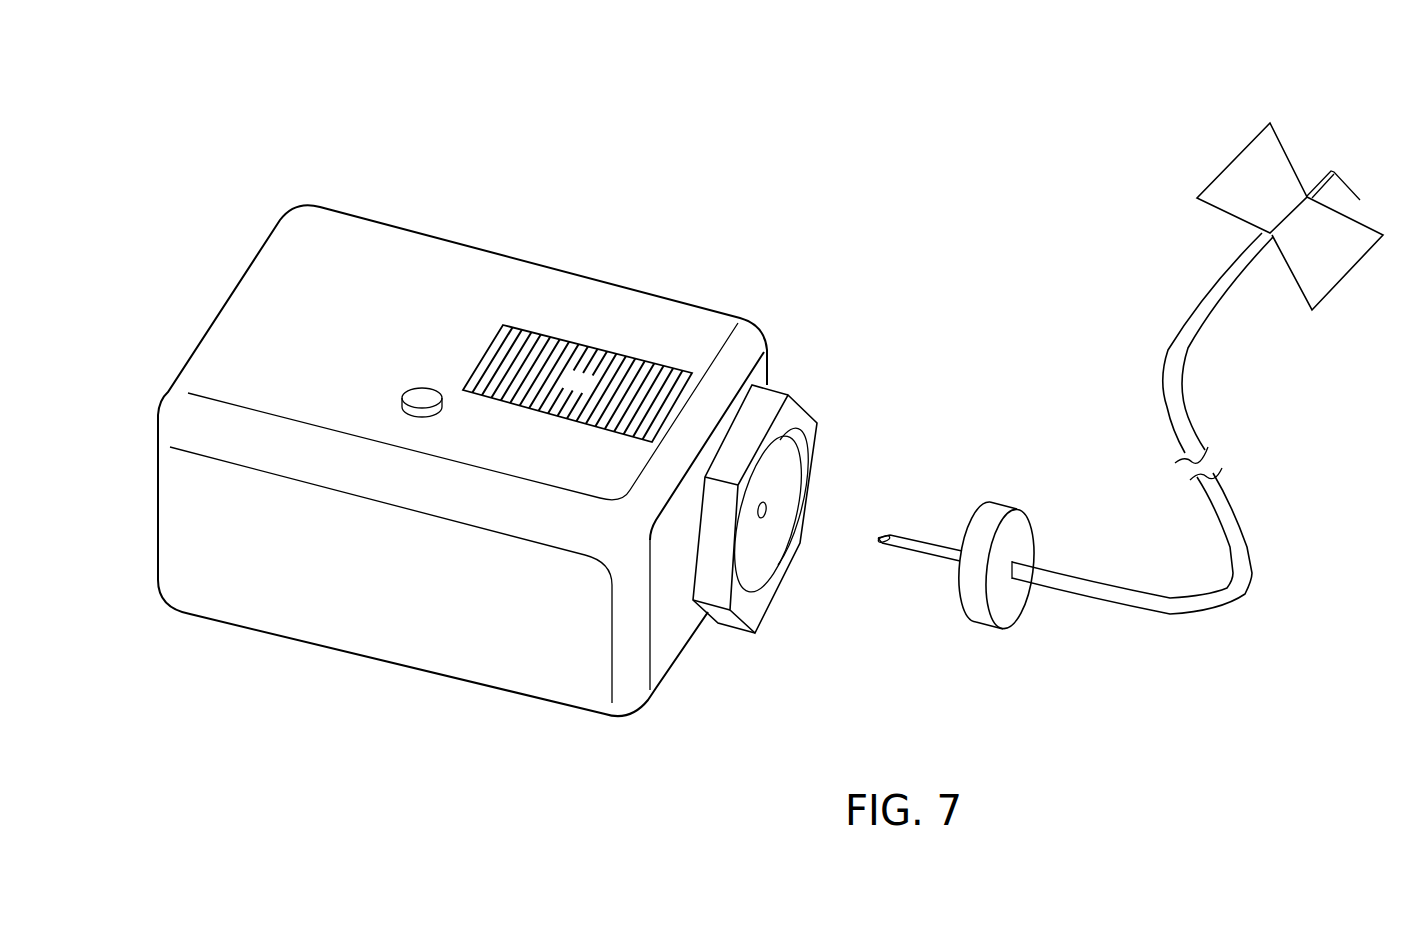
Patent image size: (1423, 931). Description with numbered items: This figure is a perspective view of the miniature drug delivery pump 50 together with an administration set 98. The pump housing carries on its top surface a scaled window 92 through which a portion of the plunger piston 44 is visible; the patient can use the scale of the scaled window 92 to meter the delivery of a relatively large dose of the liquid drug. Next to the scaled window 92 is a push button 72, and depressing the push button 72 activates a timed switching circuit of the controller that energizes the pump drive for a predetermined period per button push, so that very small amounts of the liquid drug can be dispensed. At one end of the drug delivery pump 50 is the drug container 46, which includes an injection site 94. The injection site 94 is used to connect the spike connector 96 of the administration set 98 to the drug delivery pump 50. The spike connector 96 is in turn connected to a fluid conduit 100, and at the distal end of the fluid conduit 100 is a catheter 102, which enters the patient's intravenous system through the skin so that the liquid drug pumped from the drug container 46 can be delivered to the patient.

The drug delivery pump 50 is at (207, 289).
The push button 72 is at (420, 393).
The plunger piston 44 is at (508, 358).
The scaled window 92 is at (648, 372).
The injection site 94 is at (766, 508).
The drug container 46 is at (755, 555).
The spike connector 96 is at (1010, 502).
The fluid conduit 100 is at (1243, 598).
The administration set 98 is at (1343, 123).
The catheter 102 is at (1375, 176).